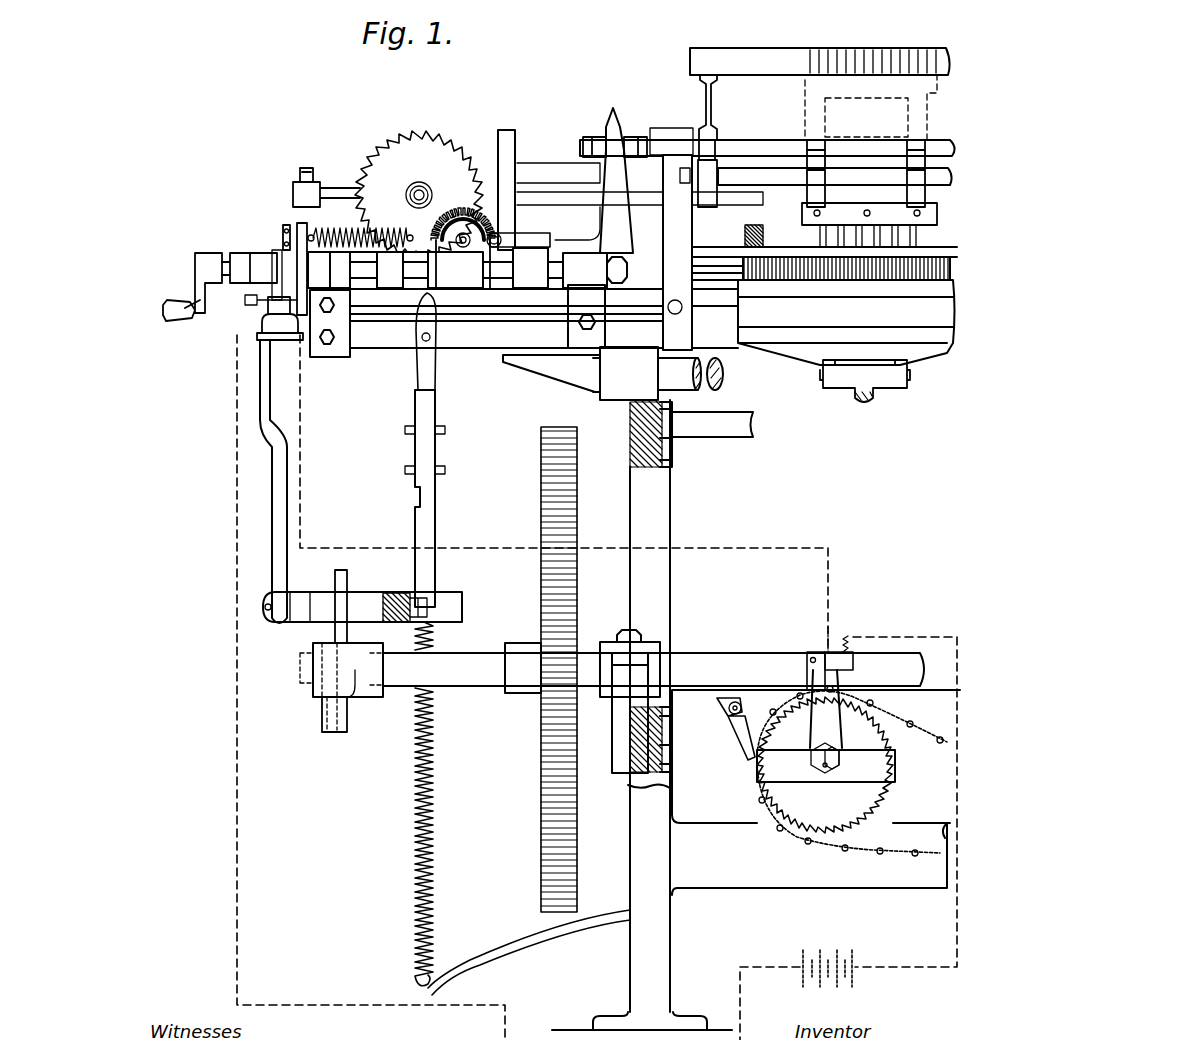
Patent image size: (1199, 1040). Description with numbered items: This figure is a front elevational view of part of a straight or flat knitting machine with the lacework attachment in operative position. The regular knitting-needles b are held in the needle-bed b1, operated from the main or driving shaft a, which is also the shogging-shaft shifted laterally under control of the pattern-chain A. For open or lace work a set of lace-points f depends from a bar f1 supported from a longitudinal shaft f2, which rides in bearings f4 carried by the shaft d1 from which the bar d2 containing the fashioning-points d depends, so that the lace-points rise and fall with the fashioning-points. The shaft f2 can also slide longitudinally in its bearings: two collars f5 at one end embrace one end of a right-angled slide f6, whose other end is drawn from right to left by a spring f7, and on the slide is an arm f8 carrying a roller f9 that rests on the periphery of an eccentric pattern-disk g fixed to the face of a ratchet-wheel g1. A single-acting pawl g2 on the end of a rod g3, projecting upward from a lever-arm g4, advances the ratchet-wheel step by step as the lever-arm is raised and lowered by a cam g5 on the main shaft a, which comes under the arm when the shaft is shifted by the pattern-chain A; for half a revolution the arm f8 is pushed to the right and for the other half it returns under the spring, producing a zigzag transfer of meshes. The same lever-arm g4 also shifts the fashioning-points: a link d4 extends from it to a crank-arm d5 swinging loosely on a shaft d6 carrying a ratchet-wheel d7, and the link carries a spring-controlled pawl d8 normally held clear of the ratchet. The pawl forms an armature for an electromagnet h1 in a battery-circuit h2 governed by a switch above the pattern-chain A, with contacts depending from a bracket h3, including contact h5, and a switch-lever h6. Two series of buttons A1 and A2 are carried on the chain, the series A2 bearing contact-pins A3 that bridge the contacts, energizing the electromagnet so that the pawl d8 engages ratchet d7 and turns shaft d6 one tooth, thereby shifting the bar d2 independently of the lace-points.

The lace-points f is at (855, 48).
The bar f1 is at (805, 92).
The shaft f2 is at (742, 152).
The bearings f4 is at (707, 150).
The collars f5 is at (597, 137).
The right-angled slide f6 is at (557, 240).
The spring f7 is at (337, 230).
The arm f8 is at (530, 243).
The roller f9 is at (495, 246).
The fashioning-points d is at (745, 235).
The shaft d1 is at (862, 143).
The bar d2 is at (527, 190).
The link d4 is at (280, 490).
The crank-arm d5 is at (288, 272).
The shaft d6 is at (225, 260).
The ratchet-wheel d7 is at (296, 240).
The pawl d8 is at (285, 287).
The pattern-disk g is at (450, 222).
The ratchet-wheel g1 is at (432, 222).
The pawl g2 is at (427, 320).
The rod g3 is at (418, 450).
The lever-arm g4 is at (394, 600).
The cam g5 is at (338, 735).
The electromagnet h1 is at (260, 322).
The battery-circuit h2 is at (493, 550).
The bracket h3 is at (825, 663).
The contact h5 is at (815, 655).
The switch-lever h6 is at (852, 640).
The main shaft a is at (300, 668).
The pattern-chain A is at (905, 745).
The buttons A1 is at (945, 742).
The buttons A2 is at (800, 703).
The contact-pins A3 is at (940, 853).
The knitting-needles b is at (850, 265).
The needle-bed b1 is at (840, 340).